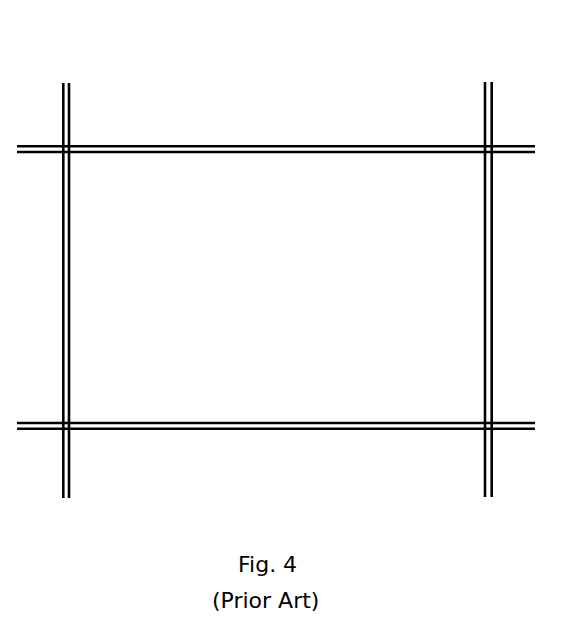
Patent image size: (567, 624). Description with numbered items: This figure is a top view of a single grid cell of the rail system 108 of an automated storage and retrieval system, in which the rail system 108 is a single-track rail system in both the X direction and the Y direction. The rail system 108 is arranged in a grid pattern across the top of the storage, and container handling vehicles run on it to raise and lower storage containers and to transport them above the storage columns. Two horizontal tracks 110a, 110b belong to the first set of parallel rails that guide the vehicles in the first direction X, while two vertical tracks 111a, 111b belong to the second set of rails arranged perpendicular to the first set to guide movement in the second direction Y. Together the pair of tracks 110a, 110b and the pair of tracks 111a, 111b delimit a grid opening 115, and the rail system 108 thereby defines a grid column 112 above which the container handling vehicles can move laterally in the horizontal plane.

The rail system 108 is at (180, 101).
The track of the first set of tracks 110a is at (172, 153).
The track of the first set of tracks 110b is at (318, 421).
The track of the second set of tracks 111a is at (72, 335).
The track of the second set of tracks 111b is at (485, 237).
The grid column 112 is at (332, 146).
The grid opening 115 is at (279, 287).